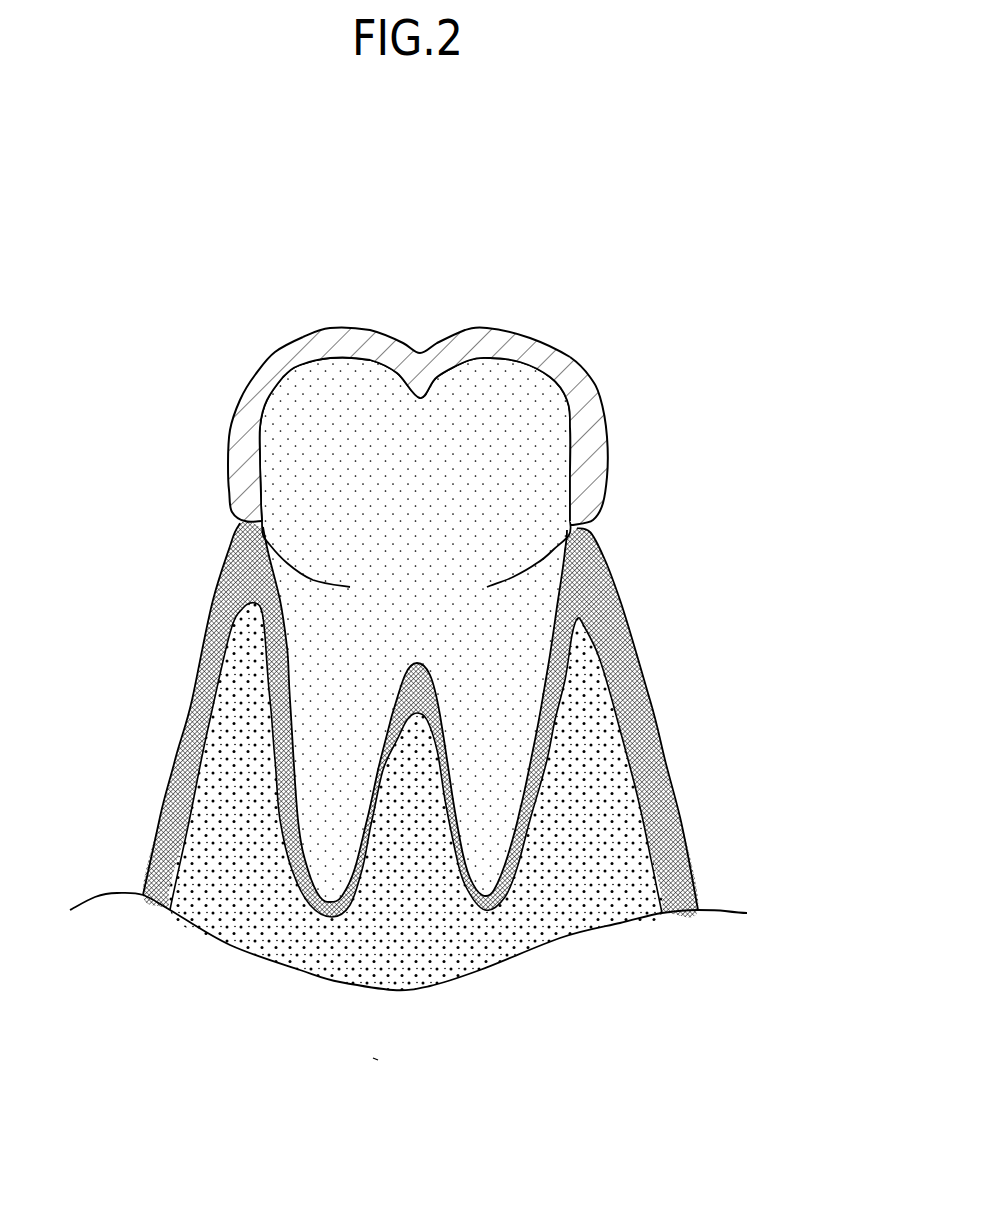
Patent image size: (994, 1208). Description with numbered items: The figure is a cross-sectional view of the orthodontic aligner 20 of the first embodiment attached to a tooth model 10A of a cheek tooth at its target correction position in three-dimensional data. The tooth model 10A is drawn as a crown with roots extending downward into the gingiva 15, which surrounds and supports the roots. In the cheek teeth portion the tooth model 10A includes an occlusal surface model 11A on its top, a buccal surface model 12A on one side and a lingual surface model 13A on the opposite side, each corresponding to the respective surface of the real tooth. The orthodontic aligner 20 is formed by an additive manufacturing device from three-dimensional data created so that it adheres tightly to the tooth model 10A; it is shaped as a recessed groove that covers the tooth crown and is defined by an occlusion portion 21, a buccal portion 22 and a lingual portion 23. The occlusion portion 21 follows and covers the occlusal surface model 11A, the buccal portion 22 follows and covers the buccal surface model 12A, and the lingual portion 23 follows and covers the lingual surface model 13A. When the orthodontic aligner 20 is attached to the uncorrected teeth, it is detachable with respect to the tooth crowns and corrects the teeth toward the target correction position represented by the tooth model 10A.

The tooth model 10A is at (427, 556).
The occlusal surface model 11A is at (345, 357).
The buccal surface model 12A is at (570, 470).
The lingual surface model 13A is at (260, 460).
The gingiva 15 is at (635, 672).
The orthodontic aligner 20 is at (421, 357).
The occlusion portion 21 is at (503, 343).
The buccal portion 22 is at (592, 438).
The lingual portion 23 is at (247, 442).